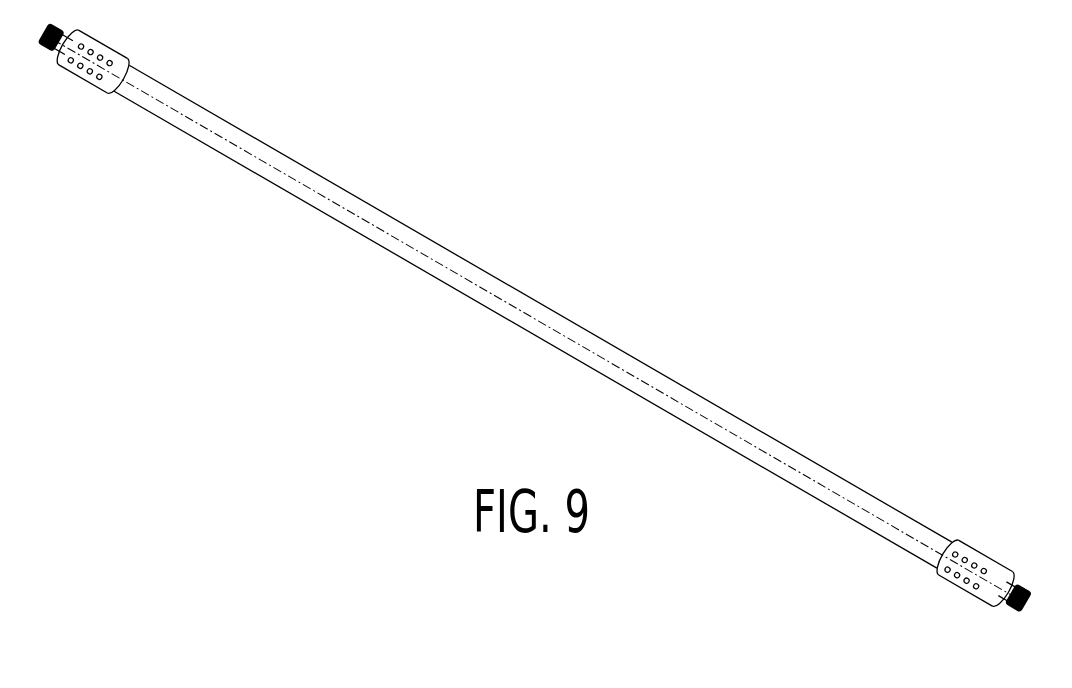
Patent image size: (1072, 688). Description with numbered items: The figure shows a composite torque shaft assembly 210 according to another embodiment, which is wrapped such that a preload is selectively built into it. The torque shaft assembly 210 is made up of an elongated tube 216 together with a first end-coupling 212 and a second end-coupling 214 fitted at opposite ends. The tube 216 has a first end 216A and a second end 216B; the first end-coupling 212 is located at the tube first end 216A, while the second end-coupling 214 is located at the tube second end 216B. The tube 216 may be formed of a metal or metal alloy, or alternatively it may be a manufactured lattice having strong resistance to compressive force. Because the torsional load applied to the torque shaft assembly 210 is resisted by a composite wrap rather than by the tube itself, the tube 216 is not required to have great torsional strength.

The torque shaft assembly 210 is at (452, 178).
The first end-coupling 212 is at (977, 555).
The second end-coupling 214 is at (95, 86).
The tube 216 is at (522, 298).
The first end 216A is at (934, 483).
The second end 216B is at (157, 47).